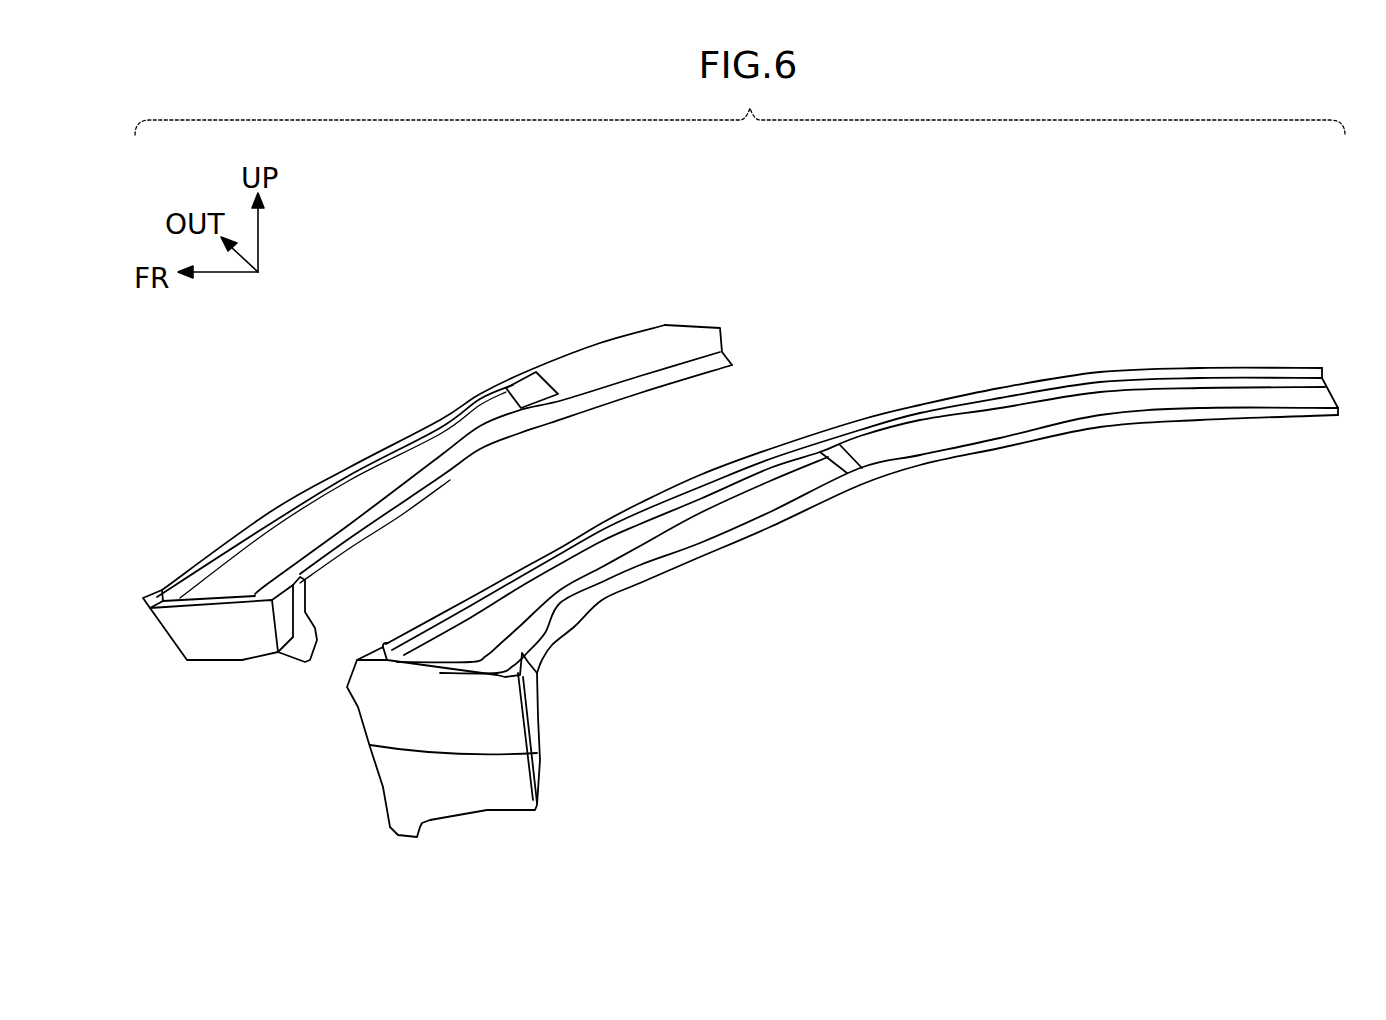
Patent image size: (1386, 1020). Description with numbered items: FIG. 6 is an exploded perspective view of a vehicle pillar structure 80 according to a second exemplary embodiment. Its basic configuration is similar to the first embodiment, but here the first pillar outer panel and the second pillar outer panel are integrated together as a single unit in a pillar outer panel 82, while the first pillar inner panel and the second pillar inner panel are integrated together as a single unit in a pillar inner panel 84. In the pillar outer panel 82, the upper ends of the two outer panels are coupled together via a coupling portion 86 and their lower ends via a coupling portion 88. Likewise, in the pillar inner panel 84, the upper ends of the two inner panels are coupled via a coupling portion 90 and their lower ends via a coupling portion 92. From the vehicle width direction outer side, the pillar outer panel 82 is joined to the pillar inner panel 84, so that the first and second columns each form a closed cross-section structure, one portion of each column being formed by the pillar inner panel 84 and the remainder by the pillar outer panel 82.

The vehicle pillar structure 80 is at (678, 287).
The pillar outer panel 82 is at (540, 364).
The pillar inner panel 84 is at (848, 428).
The coupling portion 86 is at (526, 373).
The coupling portion 88 is at (216, 631).
The coupling portion 90 is at (868, 447).
The coupling portion 92 is at (425, 705).